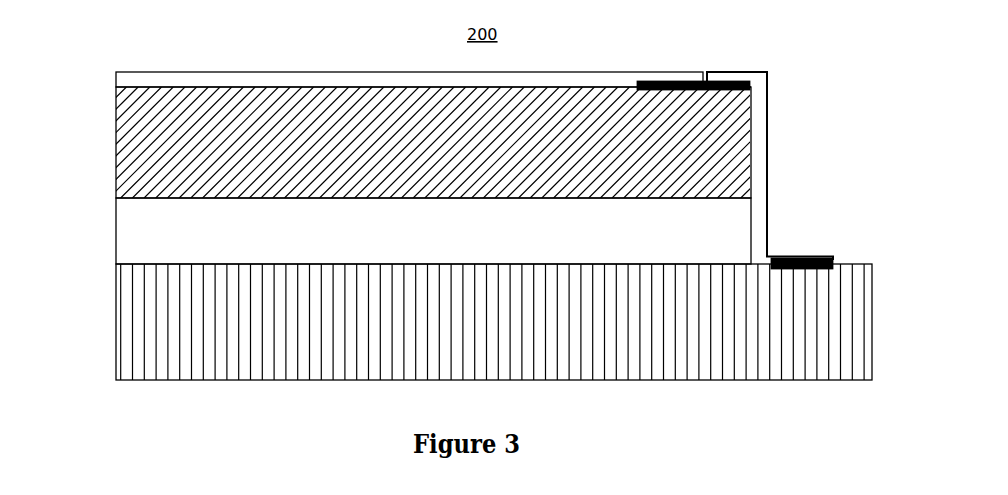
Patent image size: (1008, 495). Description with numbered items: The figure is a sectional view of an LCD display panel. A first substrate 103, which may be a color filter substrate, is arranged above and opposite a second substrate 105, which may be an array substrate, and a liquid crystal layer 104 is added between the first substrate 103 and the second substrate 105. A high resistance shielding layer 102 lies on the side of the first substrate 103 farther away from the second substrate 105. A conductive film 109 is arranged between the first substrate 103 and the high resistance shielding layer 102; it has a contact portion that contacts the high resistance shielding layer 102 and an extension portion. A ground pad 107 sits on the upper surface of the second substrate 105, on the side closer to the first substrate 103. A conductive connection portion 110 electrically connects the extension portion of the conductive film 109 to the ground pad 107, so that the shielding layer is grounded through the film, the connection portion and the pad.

The high resistance shielding layer 102 is at (116, 80).
The first substrate 103 is at (146, 145).
The liquid crystal layer 104 is at (146, 239).
The second substrate 105 is at (160, 328).
The ground pad 107 is at (805, 262).
The conductive film 109 is at (680, 82).
The conductive connection portion 110 is at (767, 115).